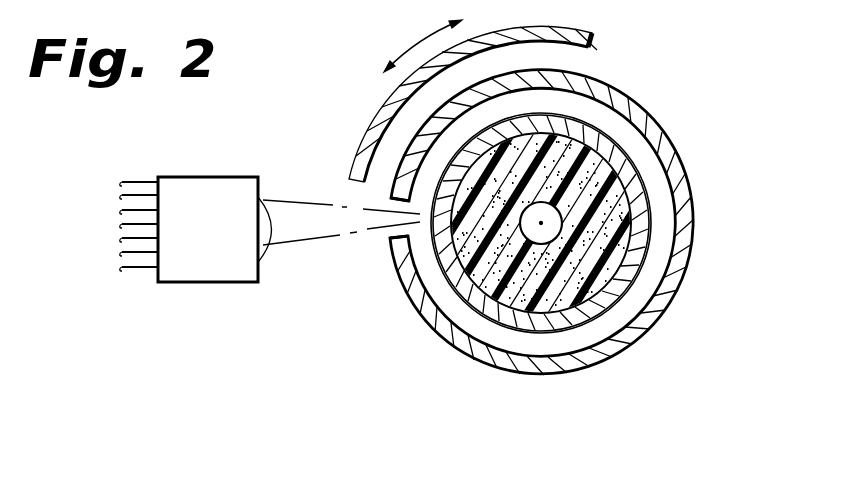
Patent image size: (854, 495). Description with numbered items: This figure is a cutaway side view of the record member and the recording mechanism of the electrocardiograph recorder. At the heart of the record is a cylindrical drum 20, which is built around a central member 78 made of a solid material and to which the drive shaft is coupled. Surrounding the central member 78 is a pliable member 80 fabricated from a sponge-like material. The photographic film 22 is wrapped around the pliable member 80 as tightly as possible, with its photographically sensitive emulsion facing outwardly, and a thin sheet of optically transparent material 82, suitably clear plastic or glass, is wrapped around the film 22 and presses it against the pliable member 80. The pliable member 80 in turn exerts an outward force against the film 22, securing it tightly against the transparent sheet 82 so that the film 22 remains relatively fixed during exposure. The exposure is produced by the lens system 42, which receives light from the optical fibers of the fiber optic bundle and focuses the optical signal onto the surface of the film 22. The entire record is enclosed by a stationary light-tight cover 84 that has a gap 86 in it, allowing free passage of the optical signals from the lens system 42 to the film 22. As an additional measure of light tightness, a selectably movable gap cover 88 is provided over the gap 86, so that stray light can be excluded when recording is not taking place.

The lens system 42 is at (205, 179).
The gap cover 88 is at (553, 26).
The light-tight cover 84 is at (664, 304).
The gap 86 is at (420, 220).
The photographic film 22 is at (650, 187).
The optically transparent sheet 82 is at (650, 248).
The pliable member 80 is at (556, 125).
The cylindrical drum 20 is at (533, 318).
The central member 78 is at (572, 197).